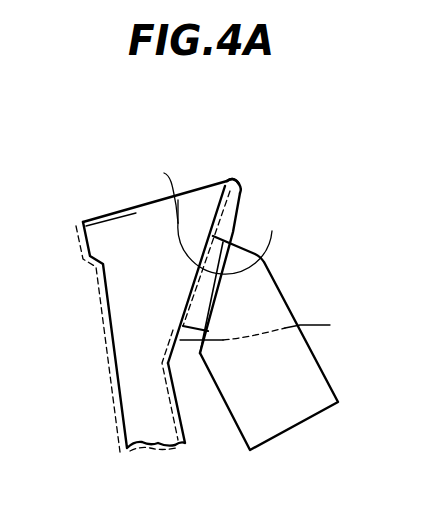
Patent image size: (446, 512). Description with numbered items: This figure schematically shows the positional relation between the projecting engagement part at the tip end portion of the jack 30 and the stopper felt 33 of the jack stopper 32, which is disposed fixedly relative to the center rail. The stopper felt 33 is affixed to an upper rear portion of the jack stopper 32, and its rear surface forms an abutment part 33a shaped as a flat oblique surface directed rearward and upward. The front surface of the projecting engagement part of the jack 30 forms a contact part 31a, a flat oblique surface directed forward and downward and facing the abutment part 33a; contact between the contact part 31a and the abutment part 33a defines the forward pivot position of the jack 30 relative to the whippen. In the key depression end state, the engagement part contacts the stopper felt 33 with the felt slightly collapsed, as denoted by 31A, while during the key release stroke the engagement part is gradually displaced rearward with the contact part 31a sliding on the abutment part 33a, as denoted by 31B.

The jack 30 is at (100, 298).
The projecting engagement part position in key depression end state 31A is at (241, 191).
The projecting engagement part position during key release 31B is at (232, 178).
The contact part 31a is at (272, 231).
The jack stopper 32 is at (296, 299).
The stopper felt 33 is at (229, 237).
The abutment part 33a is at (164, 173).